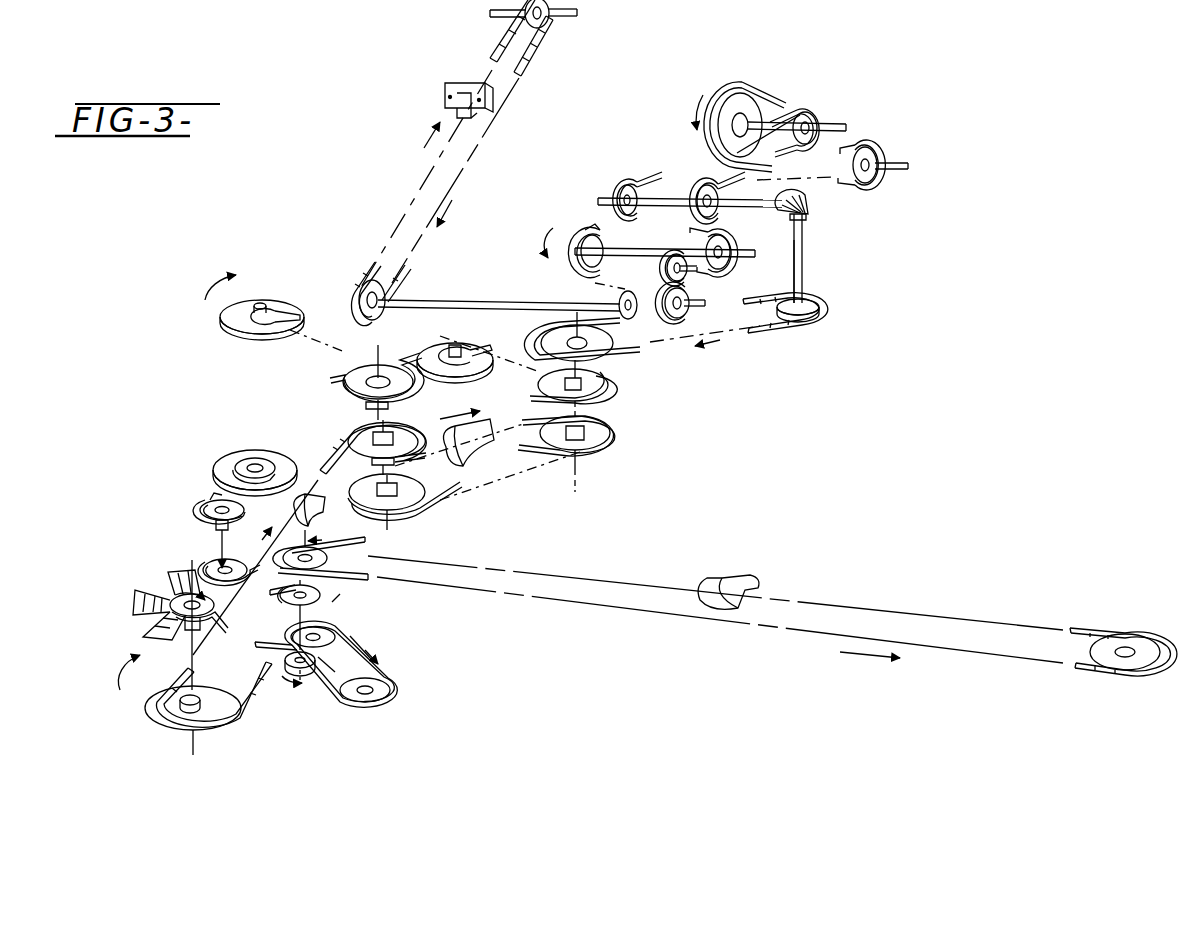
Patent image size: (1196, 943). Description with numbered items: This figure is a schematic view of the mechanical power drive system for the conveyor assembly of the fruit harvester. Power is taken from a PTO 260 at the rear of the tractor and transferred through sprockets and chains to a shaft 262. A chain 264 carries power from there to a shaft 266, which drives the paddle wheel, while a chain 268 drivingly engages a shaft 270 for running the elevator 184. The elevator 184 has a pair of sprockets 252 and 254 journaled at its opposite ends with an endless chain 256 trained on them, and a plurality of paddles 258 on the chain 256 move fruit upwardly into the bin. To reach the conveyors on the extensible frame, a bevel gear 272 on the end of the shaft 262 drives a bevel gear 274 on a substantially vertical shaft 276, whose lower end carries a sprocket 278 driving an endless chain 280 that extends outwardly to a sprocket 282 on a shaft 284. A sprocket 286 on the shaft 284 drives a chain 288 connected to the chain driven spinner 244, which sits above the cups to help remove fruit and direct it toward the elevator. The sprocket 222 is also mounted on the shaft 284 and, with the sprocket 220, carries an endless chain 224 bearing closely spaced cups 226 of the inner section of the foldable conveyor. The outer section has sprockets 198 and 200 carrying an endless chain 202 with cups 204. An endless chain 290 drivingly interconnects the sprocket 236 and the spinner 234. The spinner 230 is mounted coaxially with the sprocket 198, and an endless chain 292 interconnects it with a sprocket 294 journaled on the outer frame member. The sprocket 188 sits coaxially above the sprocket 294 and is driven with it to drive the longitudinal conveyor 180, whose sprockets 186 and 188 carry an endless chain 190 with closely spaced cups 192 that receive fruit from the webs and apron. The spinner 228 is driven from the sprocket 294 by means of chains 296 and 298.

The conveyor 180 is at (935, 613).
The elevator 184 is at (548, 70).
The sprocket 186 is at (1072, 665).
The sprocket 188 is at (345, 555).
The endless chain 190 is at (1092, 636).
The cups 192 is at (733, 578).
The sprocket 198 is at (215, 698).
The sprocket 200 is at (362, 432).
The endless chain 202 is at (335, 452).
The cups 204 is at (258, 497).
The sprocket 220 is at (405, 486).
The sprocket 222 is at (492, 445).
The endless chain 224 is at (422, 508).
The cups 226 is at (476, 462).
The spinner 228 is at (240, 450).
The spinner 230 is at (147, 592).
The spinner 234 is at (230, 335).
The sprocket 236 is at (330, 380).
The chain driven spinner 244 is at (430, 346).
The sprocket 252 is at (358, 292).
The sprocket 254 is at (500, 38).
The endless chain 256 is at (366, 262).
The paddles 258 is at (445, 92).
The PTO 260 is at (880, 176).
The shaft 262 is at (697, 186).
The chain 264 is at (622, 185).
The shaft 266 is at (596, 246).
The chain 268 is at (590, 272).
The shaft 270 is at (462, 300).
The bevel gear 272 is at (806, 204).
The bevel gear 274 is at (806, 222).
The shaft 276 is at (804, 285).
The sprocket 278 is at (819, 305).
The endless chain 280 is at (772, 330).
The sprocket 282 is at (612, 324).
The shaft 284 is at (604, 433).
The sprocket 286 is at (605, 384).
The chain 288 is at (472, 348).
The endless chain 290 is at (290, 300).
The endless chain 292 is at (388, 660).
The sprocket 294 is at (310, 678).
The chain 296 is at (208, 562).
The chain 298 is at (200, 510).